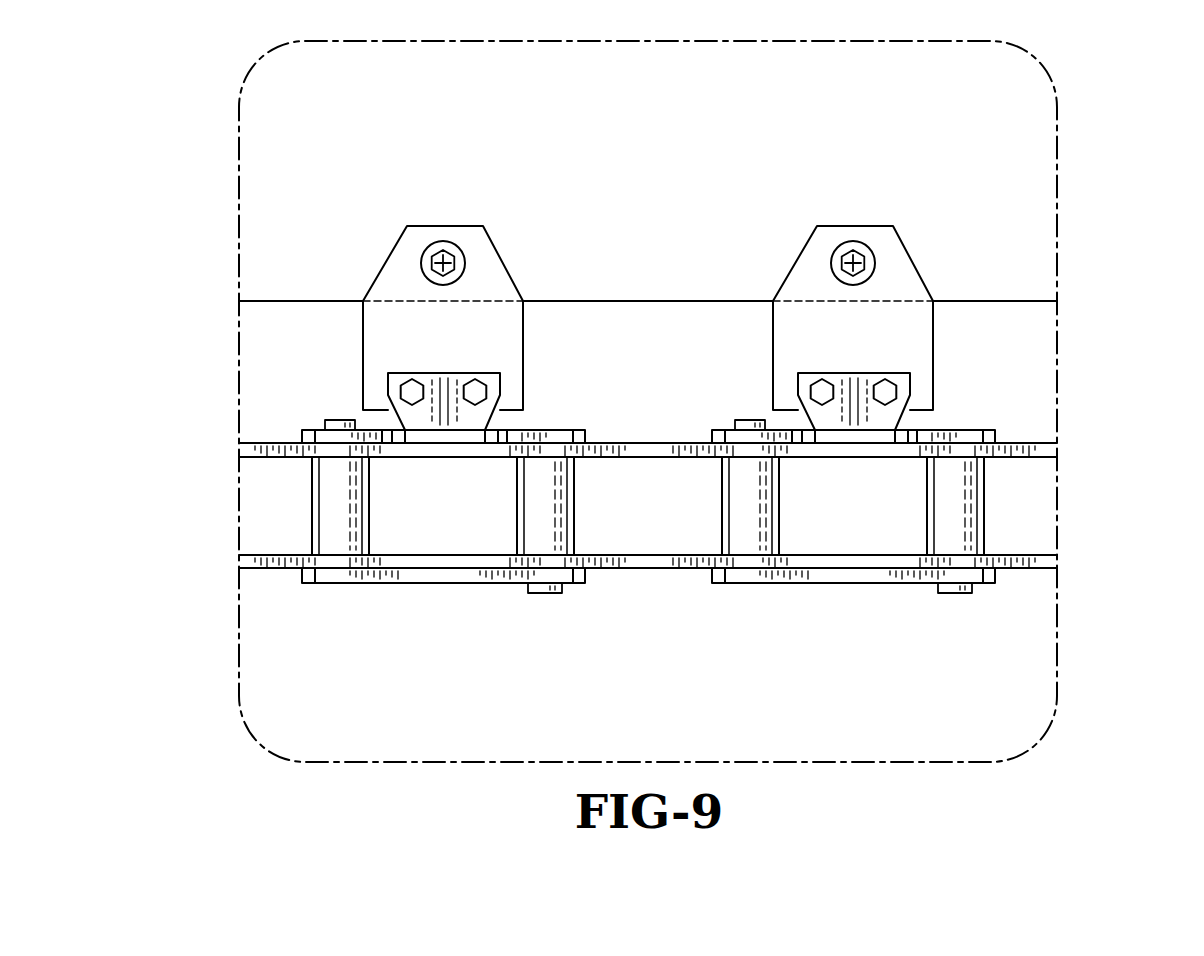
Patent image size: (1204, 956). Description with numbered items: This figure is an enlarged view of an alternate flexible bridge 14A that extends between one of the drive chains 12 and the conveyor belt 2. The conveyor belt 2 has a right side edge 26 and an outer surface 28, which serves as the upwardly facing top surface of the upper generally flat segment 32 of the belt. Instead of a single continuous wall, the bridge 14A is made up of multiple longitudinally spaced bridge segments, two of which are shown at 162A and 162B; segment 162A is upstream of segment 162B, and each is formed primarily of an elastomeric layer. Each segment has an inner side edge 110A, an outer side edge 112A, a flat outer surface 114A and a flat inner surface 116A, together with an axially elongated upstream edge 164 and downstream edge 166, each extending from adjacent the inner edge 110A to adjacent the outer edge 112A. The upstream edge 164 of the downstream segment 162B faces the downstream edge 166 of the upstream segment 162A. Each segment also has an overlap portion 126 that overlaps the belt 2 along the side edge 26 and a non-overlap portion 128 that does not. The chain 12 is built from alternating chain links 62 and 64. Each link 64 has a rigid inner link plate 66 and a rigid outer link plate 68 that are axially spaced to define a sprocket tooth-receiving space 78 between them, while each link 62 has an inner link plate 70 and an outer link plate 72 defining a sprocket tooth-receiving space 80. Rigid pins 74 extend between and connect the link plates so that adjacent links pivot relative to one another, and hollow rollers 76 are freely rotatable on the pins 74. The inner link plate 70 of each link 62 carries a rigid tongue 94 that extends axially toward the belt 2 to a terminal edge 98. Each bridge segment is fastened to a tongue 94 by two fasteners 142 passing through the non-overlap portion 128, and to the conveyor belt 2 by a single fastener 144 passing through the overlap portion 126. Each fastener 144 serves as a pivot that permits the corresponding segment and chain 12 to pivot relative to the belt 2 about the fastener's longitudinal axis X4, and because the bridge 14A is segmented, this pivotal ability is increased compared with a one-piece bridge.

The conveyor belt 2 is at (709, 401).
The outer surface 28 is at (709, 401).
The upper generally flat segment 32 is at (992, 139).
The second or right side edge 26 is at (264, 303).
The bridge 14A is at (334, 347).
The bridge segment 162A is at (390, 240).
The bridge segment 162B is at (800, 240).
The inner side edge 110A is at (462, 227).
The fastener 144 is at (441, 258).
The longitudinal axis X4 is at (455, 260).
The overlap portion 126 is at (386, 271).
The first or upstream end or edge 164 is at (363, 322).
The outer surface 114A is at (390, 334).
The inner surface 116A is at (476, 332).
The non-overlap portion 128 is at (366, 358).
The tip or terminal end or edge 98 is at (443, 373).
The second or downstream end or edge 166 is at (523, 351).
The fastener 142 is at (400, 392).
The outer side edge 112A is at (515, 412).
The rigid pin 74 is at (337, 420).
The rigid inner link plate 66 is at (280, 445).
The rigid inner link plate 70 is at (393, 445).
The tongue 94 is at (462, 420).
The rigid roller 76 is at (370, 515).
The sprocket tooth-receiving space 78 is at (272, 497).
The sprocket tooth-receiving space 80 is at (476, 532).
The chain link 64 is at (648, 611).
The rigid outer link plate 68 is at (281, 578).
The chain link 62 is at (648, 621).
The rigid outer link plate 72 is at (418, 590).
The chain 12 is at (739, 590).